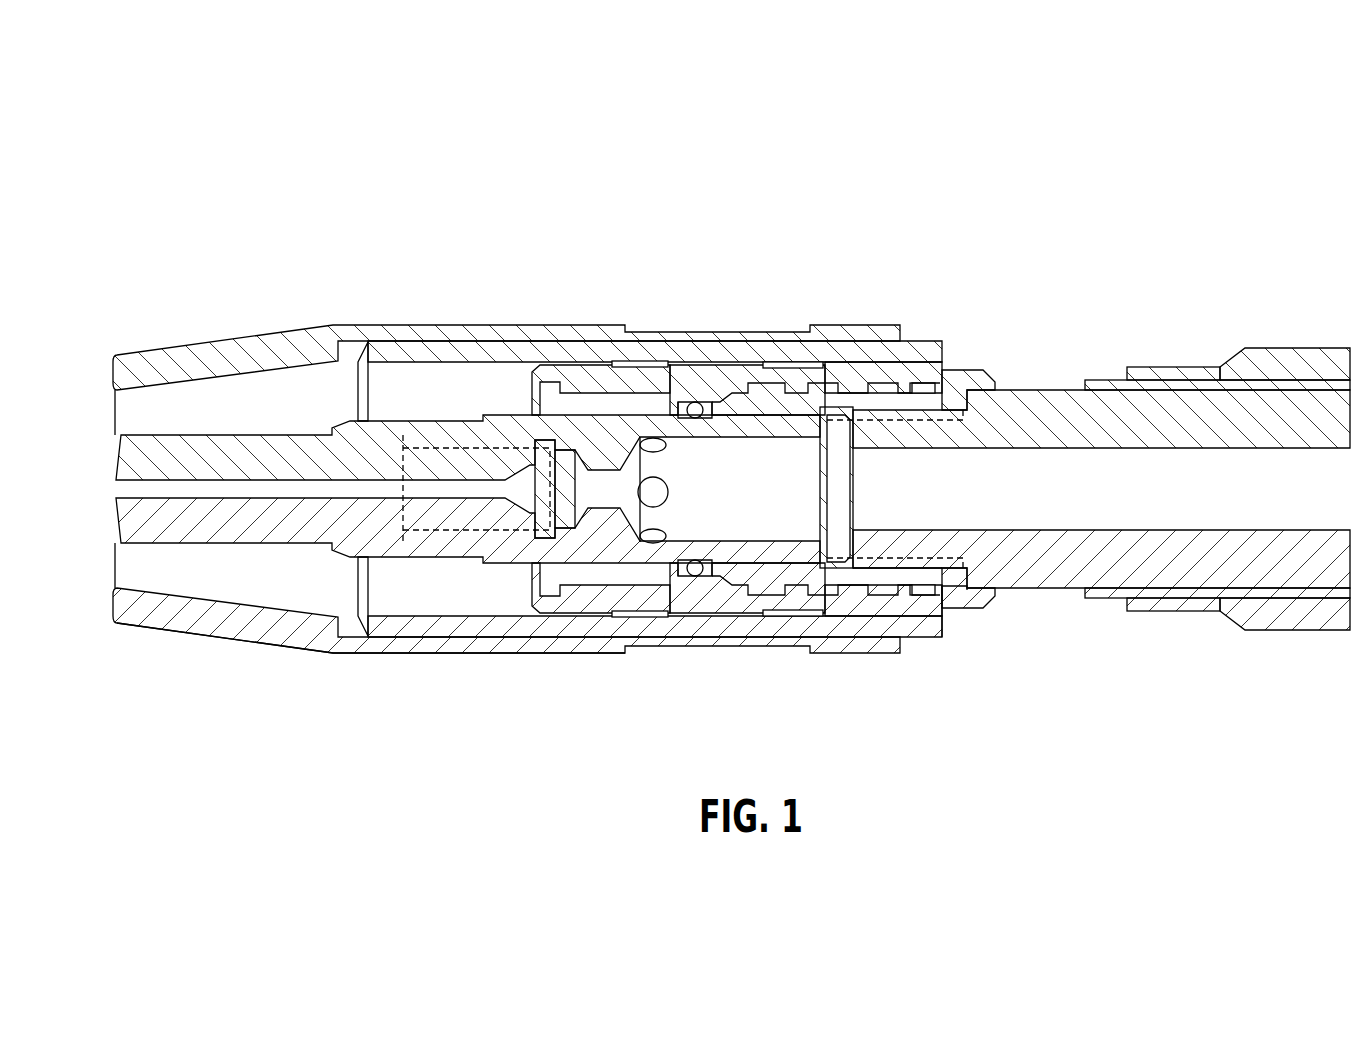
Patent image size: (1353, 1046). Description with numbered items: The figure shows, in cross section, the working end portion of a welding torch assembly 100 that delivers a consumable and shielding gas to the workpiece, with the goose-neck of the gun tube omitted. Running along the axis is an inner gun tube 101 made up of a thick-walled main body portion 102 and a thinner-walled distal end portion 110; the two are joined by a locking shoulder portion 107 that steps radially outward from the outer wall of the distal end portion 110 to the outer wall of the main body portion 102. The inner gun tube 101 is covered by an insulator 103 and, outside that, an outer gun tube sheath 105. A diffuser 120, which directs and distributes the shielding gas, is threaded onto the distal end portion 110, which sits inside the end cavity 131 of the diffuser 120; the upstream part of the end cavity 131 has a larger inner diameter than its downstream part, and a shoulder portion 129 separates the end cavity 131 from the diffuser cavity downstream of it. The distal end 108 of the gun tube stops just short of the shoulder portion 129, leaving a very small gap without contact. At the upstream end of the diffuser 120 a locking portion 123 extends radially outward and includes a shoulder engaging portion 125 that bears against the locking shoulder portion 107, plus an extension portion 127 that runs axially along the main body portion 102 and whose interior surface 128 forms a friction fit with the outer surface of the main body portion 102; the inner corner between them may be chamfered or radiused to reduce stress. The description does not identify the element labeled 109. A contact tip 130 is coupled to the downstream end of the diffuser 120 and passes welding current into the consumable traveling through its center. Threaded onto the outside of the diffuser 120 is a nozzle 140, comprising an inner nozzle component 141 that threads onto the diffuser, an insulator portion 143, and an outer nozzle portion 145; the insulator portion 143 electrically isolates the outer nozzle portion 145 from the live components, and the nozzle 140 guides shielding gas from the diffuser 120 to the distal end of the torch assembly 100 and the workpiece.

The torch assembly 100 is at (980, 185).
The inner gun tube 101 is at (1045, 388).
The main body portion 102 is at (1180, 423).
The insulator 103 is at (1110, 375).
The outer gun tube sheath 105 is at (1255, 348).
The locking shoulder portion 107 is at (985, 398).
The distal end 108 is at (828, 433).
The neck 109 is at (965, 577).
The distal end portion 110 is at (933, 433).
The diffuser 120 is at (760, 410).
The locking portion 123 is at (960, 378).
The shoulder engaging portion 125 is at (945, 579).
The extension portion 127 is at (993, 600).
The interior surface 128 is at (983, 582).
The shoulder portion 129 is at (794, 424).
The contact tip 130 is at (275, 450).
The end cavity 131 is at (887, 462).
The nozzle 140 is at (205, 343).
The inner nozzle component 141 is at (573, 600).
The insulator portion 143 is at (628, 628).
The outer nozzle portion 145 is at (286, 652).